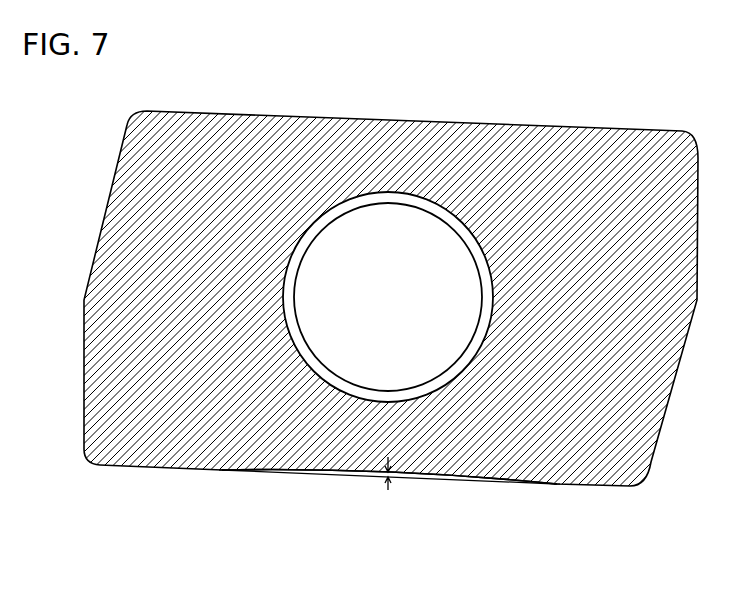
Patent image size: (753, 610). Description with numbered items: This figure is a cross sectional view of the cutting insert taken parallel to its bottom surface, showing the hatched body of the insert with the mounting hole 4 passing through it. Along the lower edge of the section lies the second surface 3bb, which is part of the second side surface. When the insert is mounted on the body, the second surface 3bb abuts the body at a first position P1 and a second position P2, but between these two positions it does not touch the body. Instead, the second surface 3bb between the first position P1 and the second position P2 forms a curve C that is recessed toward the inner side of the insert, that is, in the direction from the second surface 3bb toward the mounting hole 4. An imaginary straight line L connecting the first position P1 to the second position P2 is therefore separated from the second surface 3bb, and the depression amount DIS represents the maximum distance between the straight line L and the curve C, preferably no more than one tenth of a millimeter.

The mounting hole 4 is at (290, 277).
The second surface 3bb is at (151, 470).
The first position P1 is at (222, 471).
The second position P2 is at (557, 486).
The curve C is at (337, 471).
The straight line L is at (503, 485).
The depression amount DIS is at (395, 478).